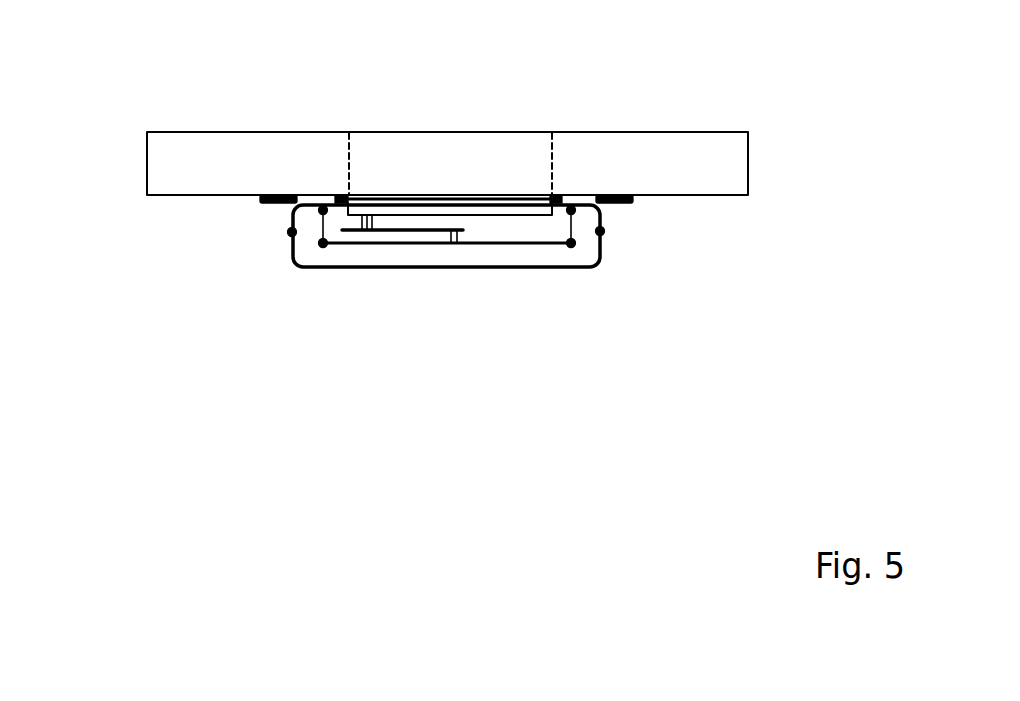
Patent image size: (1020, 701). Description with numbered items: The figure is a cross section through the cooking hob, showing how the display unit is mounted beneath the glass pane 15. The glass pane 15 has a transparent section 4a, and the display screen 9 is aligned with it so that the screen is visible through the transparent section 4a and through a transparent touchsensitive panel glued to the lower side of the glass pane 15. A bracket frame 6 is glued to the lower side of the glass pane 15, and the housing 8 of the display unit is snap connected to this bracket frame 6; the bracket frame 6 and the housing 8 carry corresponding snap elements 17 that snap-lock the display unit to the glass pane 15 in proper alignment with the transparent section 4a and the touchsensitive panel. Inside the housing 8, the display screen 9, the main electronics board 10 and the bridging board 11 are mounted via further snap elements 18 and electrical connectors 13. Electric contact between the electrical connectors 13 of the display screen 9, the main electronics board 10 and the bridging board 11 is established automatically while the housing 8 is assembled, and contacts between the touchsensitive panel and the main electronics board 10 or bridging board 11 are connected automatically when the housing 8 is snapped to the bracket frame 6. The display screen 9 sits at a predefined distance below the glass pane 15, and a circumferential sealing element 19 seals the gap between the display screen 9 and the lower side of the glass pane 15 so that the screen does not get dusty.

The glass pane 15 is at (187, 145).
The transparent section 4a is at (367, 142).
The bracket frame 6 is at (267, 195).
The circumferential sealing element 19 is at (340, 196).
The display screen 9 is at (455, 205).
The housing 8 is at (577, 268).
The snap elements 17 is at (292, 232).
The further snap elements 18 is at (322, 245).
The bridging board 11 is at (527, 245).
The main electronics board 10 is at (343, 233).
The electrical connectors 13 is at (450, 240).